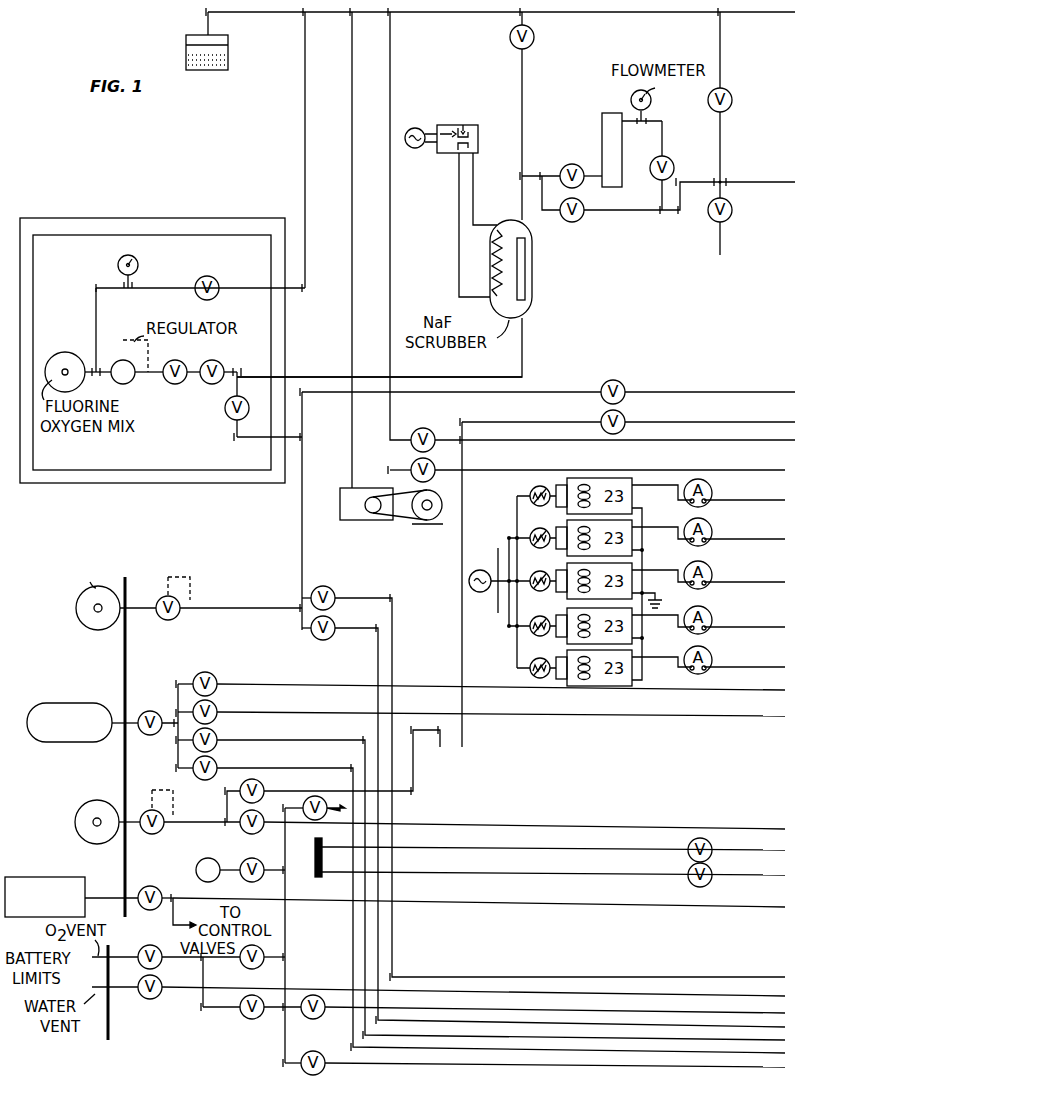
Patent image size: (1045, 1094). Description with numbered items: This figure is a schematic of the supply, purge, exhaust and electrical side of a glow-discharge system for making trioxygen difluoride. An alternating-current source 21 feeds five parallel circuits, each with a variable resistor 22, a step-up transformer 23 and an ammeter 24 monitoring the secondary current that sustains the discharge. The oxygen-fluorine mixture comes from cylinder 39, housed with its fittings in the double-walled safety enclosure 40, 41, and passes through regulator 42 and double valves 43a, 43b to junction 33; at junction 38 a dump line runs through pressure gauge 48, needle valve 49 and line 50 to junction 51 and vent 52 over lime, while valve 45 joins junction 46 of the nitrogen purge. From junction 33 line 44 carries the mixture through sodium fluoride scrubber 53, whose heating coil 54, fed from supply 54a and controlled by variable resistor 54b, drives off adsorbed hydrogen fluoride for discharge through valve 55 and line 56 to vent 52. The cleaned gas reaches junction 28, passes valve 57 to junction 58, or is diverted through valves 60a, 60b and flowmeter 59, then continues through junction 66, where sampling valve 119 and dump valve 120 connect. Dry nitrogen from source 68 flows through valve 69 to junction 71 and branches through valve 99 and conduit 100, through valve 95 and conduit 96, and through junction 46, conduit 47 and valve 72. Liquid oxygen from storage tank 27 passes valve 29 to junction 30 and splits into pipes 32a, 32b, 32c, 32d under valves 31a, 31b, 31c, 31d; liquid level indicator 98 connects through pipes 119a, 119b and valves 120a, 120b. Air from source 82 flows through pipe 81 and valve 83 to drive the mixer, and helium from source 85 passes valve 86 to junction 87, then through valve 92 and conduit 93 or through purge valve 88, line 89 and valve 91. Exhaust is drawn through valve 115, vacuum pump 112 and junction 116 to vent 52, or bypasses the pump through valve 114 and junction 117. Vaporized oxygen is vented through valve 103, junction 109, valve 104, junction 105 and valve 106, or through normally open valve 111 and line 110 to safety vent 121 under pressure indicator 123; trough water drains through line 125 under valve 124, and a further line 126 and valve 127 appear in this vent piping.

The source of power 21 is at (478, 592).
The variable resistor 22 is at (528, 490).
The transformer 23 is at (594, 582).
The ammeter 24 is at (708, 505).
The storage tank 27 is at (70, 702).
The junction 28 is at (522, 176).
The valve 29 is at (152, 711).
The junction 30 is at (170, 730).
The valve 31a is at (215, 676).
The valve 31b is at (215, 704).
The valve 31c is at (215, 732).
The valve 31d is at (215, 760).
The pipe 32a is at (678, 690).
The pipe 32b is at (690, 716).
The branch 32c is at (300, 746).
The branch 32d is at (640, 1053).
The junction 33 is at (237, 368).
The junction 38 is at (98, 380).
The gas cylinder 39 is at (68, 352).
The safety enclosure 40 is at (195, 235).
The safety enclosure 41 is at (140, 218).
The regulator 42 is at (120, 360).
The valve 43a is at (172, 384).
The valve 43b is at (208, 384).
The line 44 is at (308, 377).
The valve 45 is at (228, 414).
The junction 46 is at (305, 440).
The conduit 47 is at (318, 396).
The pressure gauge 48 is at (120, 260).
The needle-valve 49 is at (212, 276).
The line 50 is at (232, 292).
The junction 51 is at (318, 22).
The vent 52 is at (228, 48).
The scrubber 53 is at (527, 312).
The heating coil 54 is at (497, 256).
The power source 54a is at (415, 148).
The variable resistor 54b is at (478, 133).
The valve 55 is at (533, 42).
The line 56 is at (465, 15).
The valve 57 is at (572, 222).
The junction 58 is at (660, 214).
The flowmeter 59 is at (618, 150).
The valve 60a is at (572, 164).
The valve 60b is at (672, 160).
The junction 66 is at (717, 178).
The source 68 is at (76, 606).
The valve 69 is at (160, 596).
The junction 71 is at (300, 608).
The valve 72 is at (622, 384).
The pipe 81 is at (678, 908).
The source 82 is at (85, 885).
The valve 83 is at (166, 892).
The source 85 is at (92, 800).
The valve 86 is at (146, 834).
The junction 87 is at (222, 828).
The valve 88 is at (262, 787).
The line 89 is at (312, 774).
The valve 91 is at (622, 414).
The valve 92 is at (248, 834).
The conduit 93 is at (670, 828).
The valve 95 is at (326, 586).
The conduit 96 is at (375, 594).
The liquid level indicator 98 is at (316, 878).
The valve 99 is at (320, 640).
The conduit 100 is at (378, 656).
The valve 103 is at (322, 1072).
The valve 104 is at (247, 1019).
The junction 105 is at (198, 962).
The valve 106 is at (146, 946).
The junction 109 is at (278, 1013).
The line 110 is at (285, 940).
The valve 111 is at (240, 968).
The vacuum pump 112 is at (393, 520).
The valve 114 is at (432, 416).
The valve 115 is at (411, 466).
The junction 116 is at (360, 22).
The junction 117 is at (398, 22).
The valve 119 is at (708, 216).
The pipe 119a is at (440, 850).
The pipe 119b is at (440, 875).
The valve 120 is at (708, 100).
The valve 120a is at (688, 848).
The valve 120b is at (690, 882).
The safety vent 121 is at (312, 796).
The pressure indicator 123 is at (196, 870).
The valve 124 is at (147, 999).
The line 125 is at (286, 962).
The line 126 is at (340, 989).
The valve 127 is at (310, 1019).